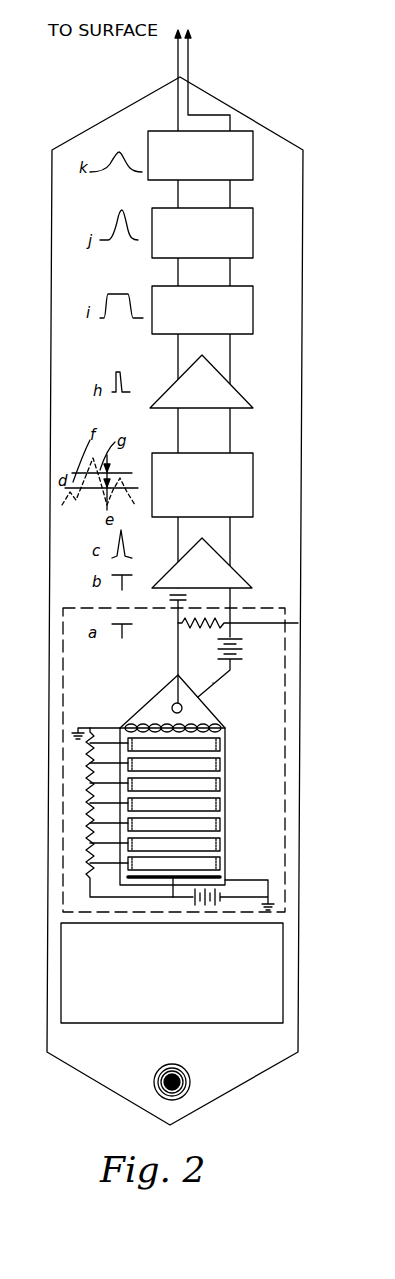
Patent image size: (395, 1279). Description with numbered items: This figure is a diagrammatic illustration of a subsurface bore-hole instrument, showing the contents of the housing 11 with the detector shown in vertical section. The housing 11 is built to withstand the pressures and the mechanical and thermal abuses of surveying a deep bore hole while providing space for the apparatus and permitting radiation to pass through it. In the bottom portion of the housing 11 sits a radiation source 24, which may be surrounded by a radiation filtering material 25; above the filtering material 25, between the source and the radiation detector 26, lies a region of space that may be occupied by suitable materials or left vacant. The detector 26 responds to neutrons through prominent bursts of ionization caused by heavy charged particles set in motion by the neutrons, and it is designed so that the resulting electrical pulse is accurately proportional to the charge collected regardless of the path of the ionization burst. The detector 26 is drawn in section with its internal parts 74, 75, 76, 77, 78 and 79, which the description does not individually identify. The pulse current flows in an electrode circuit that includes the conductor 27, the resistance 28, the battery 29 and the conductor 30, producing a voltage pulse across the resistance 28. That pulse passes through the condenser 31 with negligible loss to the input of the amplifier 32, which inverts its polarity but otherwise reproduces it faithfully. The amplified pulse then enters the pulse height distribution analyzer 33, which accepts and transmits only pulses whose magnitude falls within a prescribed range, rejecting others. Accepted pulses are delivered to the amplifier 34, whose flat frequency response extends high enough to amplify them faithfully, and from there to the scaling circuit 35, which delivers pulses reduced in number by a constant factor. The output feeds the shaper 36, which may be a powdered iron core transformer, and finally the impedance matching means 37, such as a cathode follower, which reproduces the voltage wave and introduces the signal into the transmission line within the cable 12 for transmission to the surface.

The housing 11 is at (300, 818).
The cable 12 is at (190, 58).
The radiation source 24 is at (190, 1080).
The radiation filtering material 25 is at (234, 1052).
The radiation detector 26 is at (285, 693).
The conductor 27 is at (172, 708).
The resistance 28 is at (209, 630).
The battery 29 is at (239, 660).
The conductor 30 is at (214, 684).
The condenser 31 is at (172, 607).
The amplifier 32 is at (250, 585).
The pulse height distribution analyzer 33 is at (253, 494).
The amplifier 34 is at (253, 405).
The scaling circuit 35 is at (253, 322).
The shaper 36 is at (253, 246).
The impedance matching means 37 is at (253, 174).
The photomultiplier tube 74 is at (226, 769).
The anode 75 is at (128, 878).
The dynodes 76 is at (221, 805).
The photocathode coil 77 is at (225, 730).
The battery 78 is at (230, 898).
The voltage divider resistor chain 79 is at (90, 824).